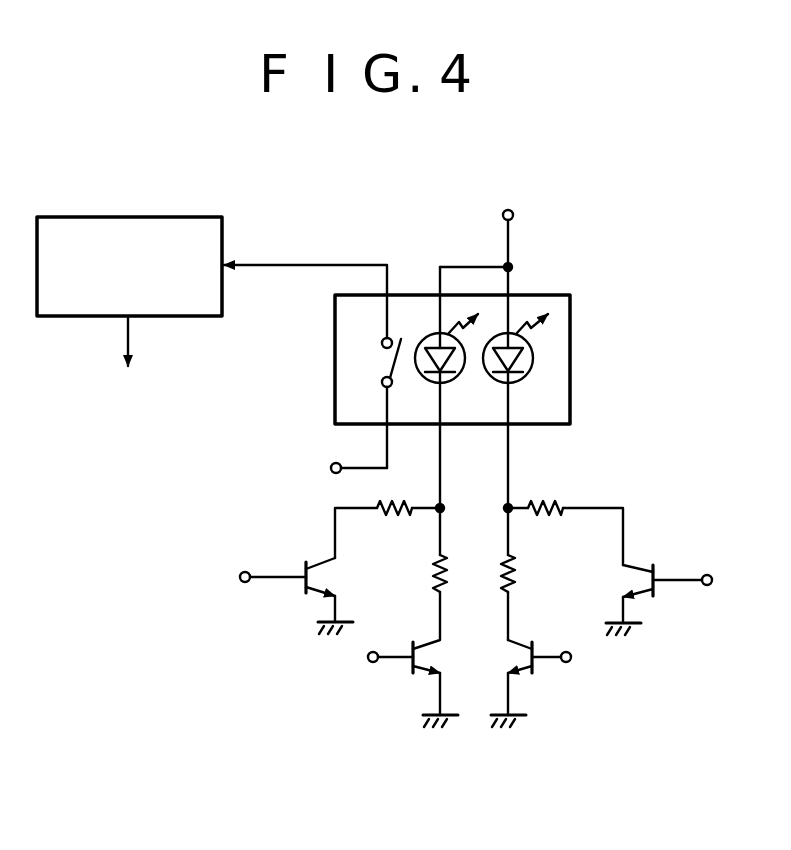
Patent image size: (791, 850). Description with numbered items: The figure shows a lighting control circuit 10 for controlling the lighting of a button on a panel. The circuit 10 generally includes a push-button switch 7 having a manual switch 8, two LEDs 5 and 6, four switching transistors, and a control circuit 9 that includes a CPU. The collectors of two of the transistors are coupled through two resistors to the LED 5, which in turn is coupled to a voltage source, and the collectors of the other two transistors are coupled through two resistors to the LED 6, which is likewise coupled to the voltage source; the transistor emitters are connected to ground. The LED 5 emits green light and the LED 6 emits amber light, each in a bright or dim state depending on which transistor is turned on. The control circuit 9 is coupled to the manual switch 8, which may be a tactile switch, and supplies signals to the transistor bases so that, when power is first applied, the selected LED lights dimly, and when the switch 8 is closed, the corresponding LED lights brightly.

The LED 5 is at (460, 375).
The LED 6 is at (532, 372).
The push-button switch 7 is at (570, 322).
The manual switch 8 is at (393, 360).
The control circuit 9 is at (168, 217).
The lighting control circuit 10 is at (476, 464).